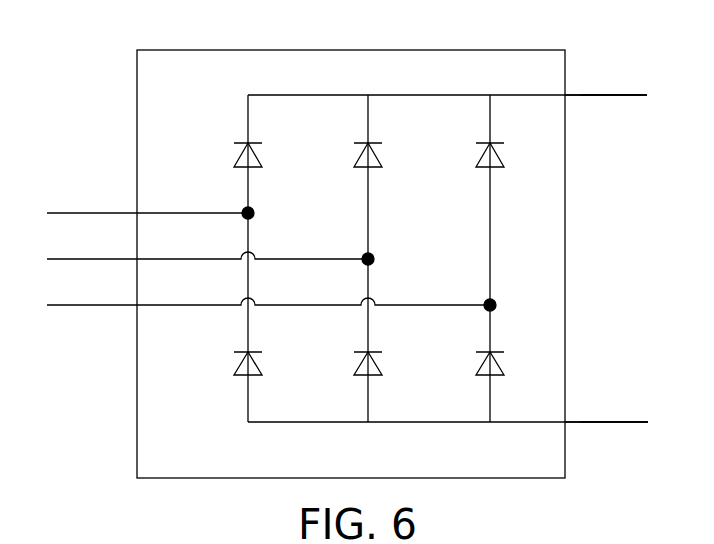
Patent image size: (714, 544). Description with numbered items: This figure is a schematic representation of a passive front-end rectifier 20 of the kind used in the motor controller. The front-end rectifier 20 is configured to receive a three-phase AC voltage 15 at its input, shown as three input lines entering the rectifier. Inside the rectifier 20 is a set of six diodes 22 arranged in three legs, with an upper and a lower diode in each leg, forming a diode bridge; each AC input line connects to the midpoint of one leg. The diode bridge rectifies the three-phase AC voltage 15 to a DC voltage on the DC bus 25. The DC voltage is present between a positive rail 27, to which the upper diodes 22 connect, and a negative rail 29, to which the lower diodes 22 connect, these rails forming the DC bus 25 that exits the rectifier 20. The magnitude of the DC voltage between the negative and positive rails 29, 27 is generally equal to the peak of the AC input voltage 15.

The three-phase AC voltage 15 is at (78, 213).
The front-end rectifier 20 is at (215, 50).
The diodes 22 is at (260, 158).
The DC bus 25 is at (593, 99).
The positive rail 27 is at (632, 95).
The negative rail 29 is at (582, 423).